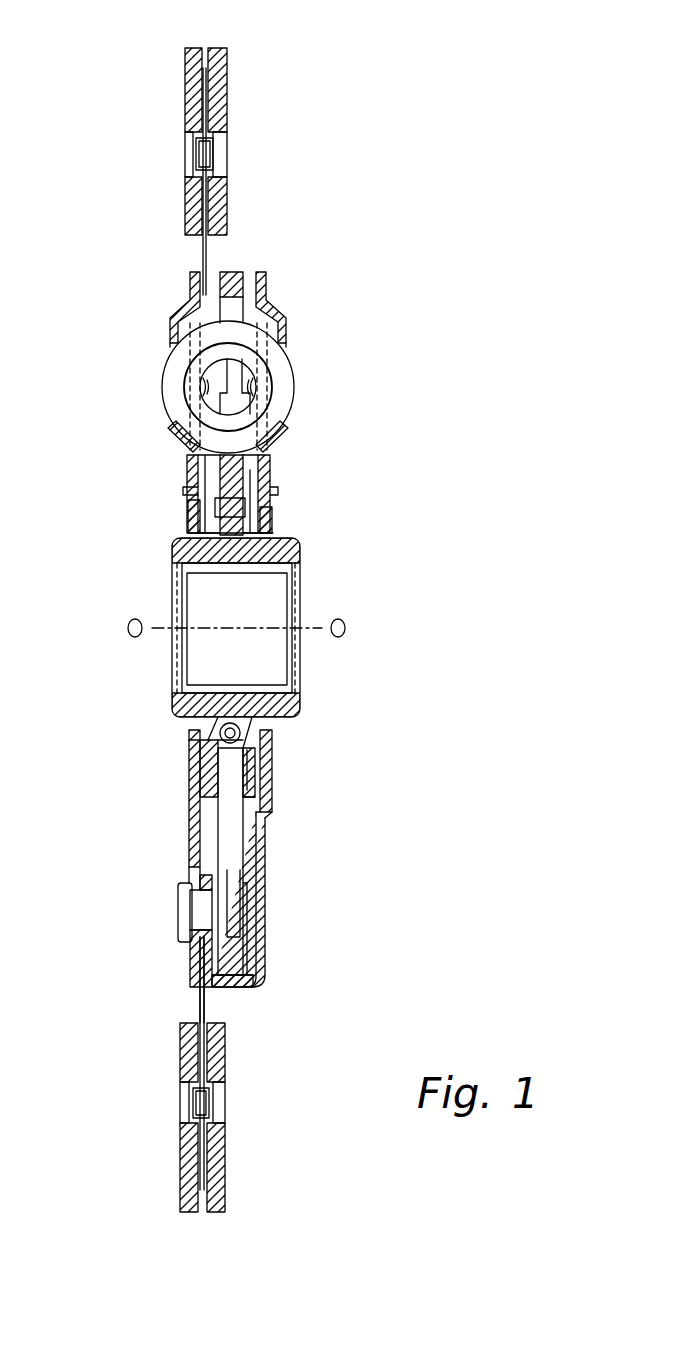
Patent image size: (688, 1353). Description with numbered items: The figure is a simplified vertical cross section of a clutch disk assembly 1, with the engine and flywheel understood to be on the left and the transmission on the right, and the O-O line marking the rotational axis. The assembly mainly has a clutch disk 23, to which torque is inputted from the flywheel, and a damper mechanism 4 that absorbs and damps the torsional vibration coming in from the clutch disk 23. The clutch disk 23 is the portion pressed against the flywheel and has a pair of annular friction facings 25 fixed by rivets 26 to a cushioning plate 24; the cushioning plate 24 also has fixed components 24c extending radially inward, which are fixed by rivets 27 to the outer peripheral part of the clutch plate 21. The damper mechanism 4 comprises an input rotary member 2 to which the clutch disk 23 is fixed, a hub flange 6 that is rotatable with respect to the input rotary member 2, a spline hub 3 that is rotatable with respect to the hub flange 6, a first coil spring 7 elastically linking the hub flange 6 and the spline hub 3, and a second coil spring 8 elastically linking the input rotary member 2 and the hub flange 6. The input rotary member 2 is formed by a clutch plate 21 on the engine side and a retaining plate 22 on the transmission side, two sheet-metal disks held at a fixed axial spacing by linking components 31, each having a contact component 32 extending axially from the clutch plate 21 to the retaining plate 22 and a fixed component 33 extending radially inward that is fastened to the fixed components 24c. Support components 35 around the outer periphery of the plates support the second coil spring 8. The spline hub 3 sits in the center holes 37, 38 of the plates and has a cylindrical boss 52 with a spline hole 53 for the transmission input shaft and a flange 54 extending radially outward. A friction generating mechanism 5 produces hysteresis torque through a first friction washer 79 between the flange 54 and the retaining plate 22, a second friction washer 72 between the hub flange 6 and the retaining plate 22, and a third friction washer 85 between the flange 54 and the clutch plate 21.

The clutch disk assembly 1 is at (446, 175).
The input rotary member 2 is at (233, 338).
The spline hub 3 is at (248, 622).
The damper mechanism 4 is at (313, 387).
The friction generating mechanism 5 is at (277, 765).
The hub flange 6 is at (236, 268).
The first coil spring 7 is at (280, 705).
The second coil spring 8 is at (298, 388).
The clutch plate 21 is at (188, 848).
The retaining plate 22 is at (308, 895).
The clutch disk 23 is at (232, 614).
The cushioning plate 24 is at (190, 208).
The fixed components 24c is at (197, 945).
The friction facings 25 is at (190, 82).
The rivets 26 is at (200, 155).
The rivets 27 is at (200, 908).
The linking components 31 is at (266, 985).
The contact component 32 is at (231, 985).
The fixed component 33 is at (195, 963).
The support components 35 is at (160, 333).
The center hole 37 is at (187, 525).
The center hole 38 is at (272, 535).
The boss 52 is at (192, 552).
The spline hole 53 is at (262, 573).
The flange 54 is at (216, 535).
The second friction washer 72 is at (281, 474).
The first friction washer 79 is at (262, 510).
The third friction washer 85 is at (243, 485).